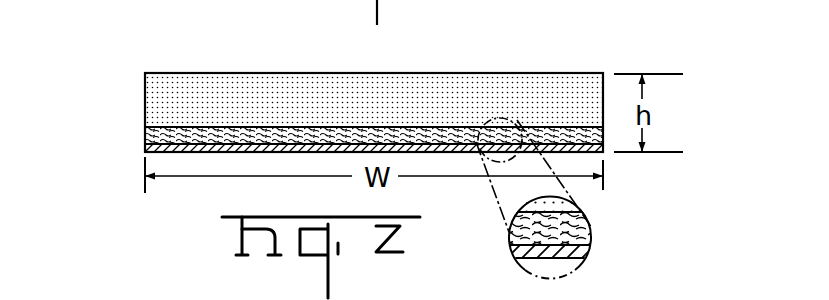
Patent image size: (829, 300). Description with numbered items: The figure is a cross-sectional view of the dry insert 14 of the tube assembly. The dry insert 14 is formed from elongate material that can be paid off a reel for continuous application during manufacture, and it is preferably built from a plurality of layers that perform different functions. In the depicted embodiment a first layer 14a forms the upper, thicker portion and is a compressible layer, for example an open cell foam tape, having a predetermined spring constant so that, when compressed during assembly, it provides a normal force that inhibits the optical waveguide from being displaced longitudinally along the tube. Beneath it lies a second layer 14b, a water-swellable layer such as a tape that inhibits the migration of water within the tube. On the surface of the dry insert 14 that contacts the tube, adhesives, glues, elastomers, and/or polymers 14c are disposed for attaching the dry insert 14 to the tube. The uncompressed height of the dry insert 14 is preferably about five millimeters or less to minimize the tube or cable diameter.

The dry insert 14 is at (355, 134).
The first layer 14a is at (190, 107).
The second layer 14b is at (143, 136).
The adhesives, glues, elastomers, and/or polymers 14c is at (572, 258).